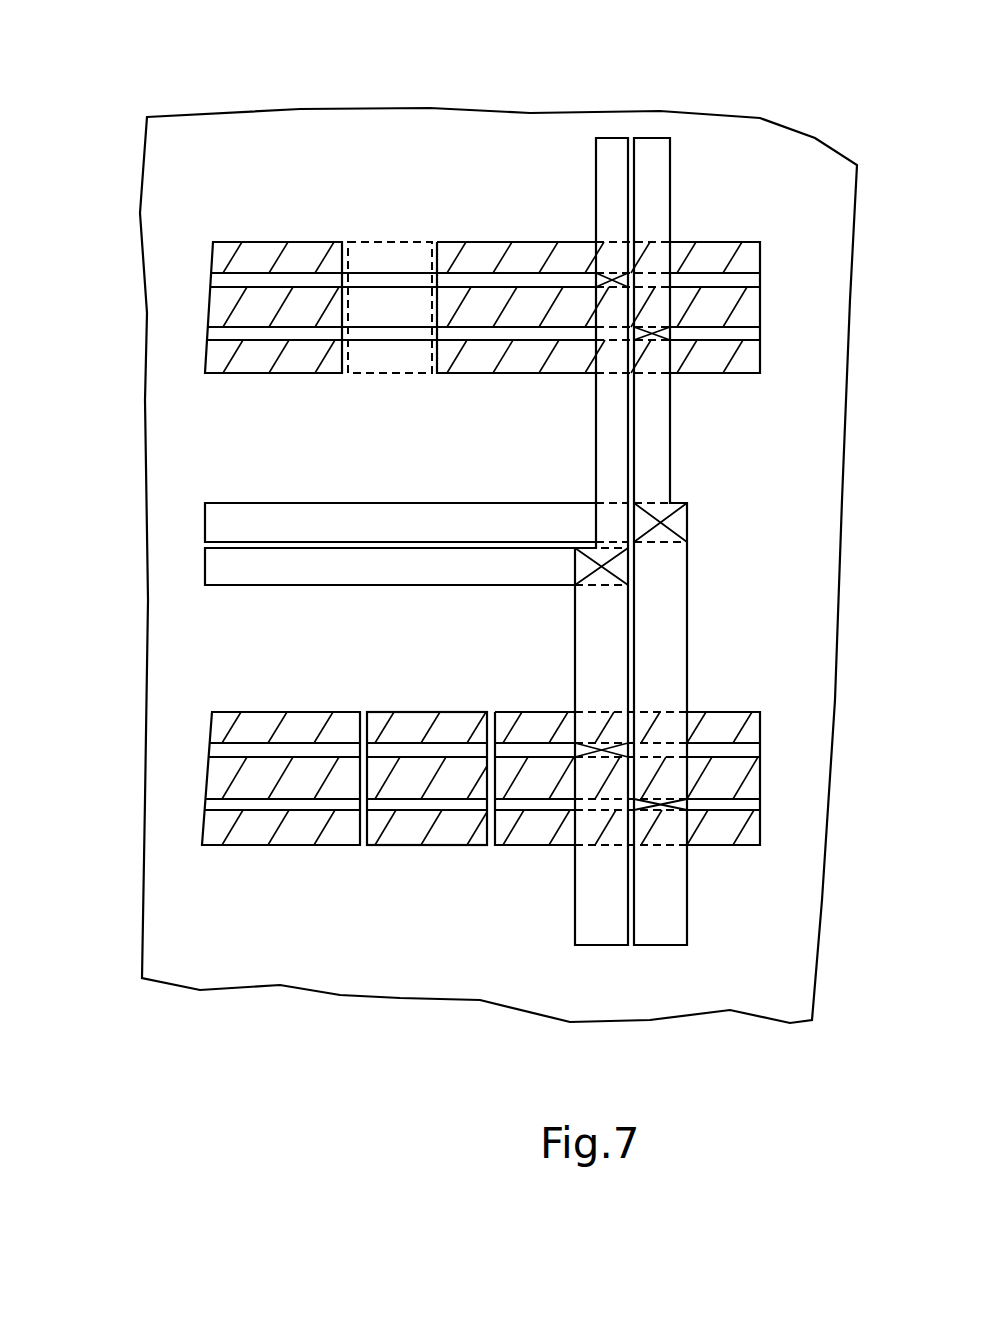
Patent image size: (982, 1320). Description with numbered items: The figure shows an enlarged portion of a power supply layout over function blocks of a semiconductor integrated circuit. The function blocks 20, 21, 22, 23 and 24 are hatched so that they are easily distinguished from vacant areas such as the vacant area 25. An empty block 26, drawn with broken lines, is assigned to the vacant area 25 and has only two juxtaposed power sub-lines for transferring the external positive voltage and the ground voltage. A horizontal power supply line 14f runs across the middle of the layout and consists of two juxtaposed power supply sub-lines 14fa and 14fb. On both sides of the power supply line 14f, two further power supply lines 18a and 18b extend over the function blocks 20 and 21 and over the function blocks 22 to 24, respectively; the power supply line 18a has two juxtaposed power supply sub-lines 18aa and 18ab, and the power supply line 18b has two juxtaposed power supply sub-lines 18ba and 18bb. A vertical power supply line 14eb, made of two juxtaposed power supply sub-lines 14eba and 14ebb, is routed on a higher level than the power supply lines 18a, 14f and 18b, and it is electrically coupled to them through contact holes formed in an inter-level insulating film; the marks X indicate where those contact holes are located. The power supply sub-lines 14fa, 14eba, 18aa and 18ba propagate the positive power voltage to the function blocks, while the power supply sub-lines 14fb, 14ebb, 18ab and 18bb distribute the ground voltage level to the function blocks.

The power supply line 14eb is at (622, 543).
The power supply sub-line 14eba is at (606, 138).
The power supply sub-line 14ebb is at (635, 1040).
The power supply line 14f is at (371, 491).
The power supply sub-line 14fa is at (205, 560).
The power supply sub-line 14fb is at (205, 522).
The power supply line 18a is at (426, 215).
The power supply sub-line 18aa is at (226, 270).
The power supply sub-line 18ab is at (205, 333).
The power supply line 18b is at (398, 855).
The power supply sub-line 18ba is at (210, 745).
The power supply sub-line 18bb is at (205, 802).
The function block 20 is at (275, 242).
The function block 21 is at (740, 242).
The function block 22 is at (270, 845).
The function block 23 is at (415, 845).
The function block 24 is at (730, 847).
The vacant area 25 is at (407, 322).
The empty block 26 is at (402, 242).